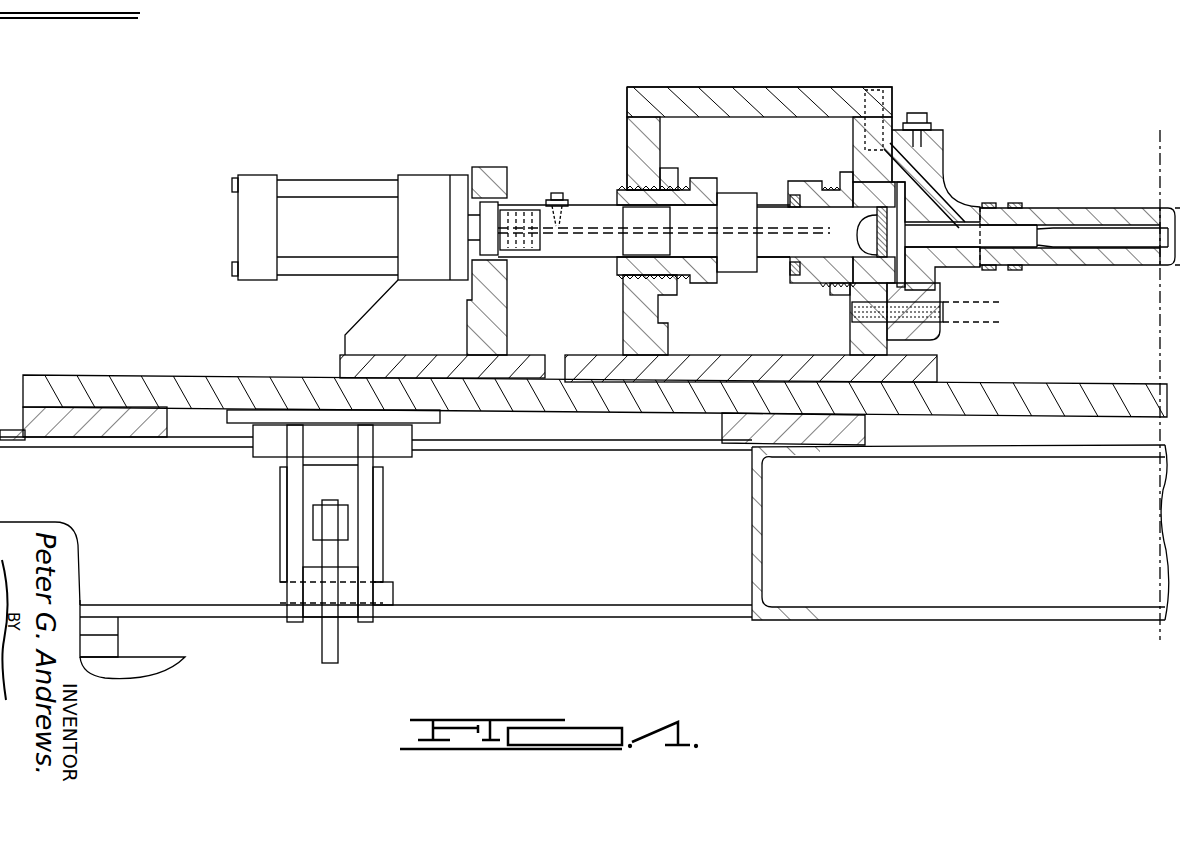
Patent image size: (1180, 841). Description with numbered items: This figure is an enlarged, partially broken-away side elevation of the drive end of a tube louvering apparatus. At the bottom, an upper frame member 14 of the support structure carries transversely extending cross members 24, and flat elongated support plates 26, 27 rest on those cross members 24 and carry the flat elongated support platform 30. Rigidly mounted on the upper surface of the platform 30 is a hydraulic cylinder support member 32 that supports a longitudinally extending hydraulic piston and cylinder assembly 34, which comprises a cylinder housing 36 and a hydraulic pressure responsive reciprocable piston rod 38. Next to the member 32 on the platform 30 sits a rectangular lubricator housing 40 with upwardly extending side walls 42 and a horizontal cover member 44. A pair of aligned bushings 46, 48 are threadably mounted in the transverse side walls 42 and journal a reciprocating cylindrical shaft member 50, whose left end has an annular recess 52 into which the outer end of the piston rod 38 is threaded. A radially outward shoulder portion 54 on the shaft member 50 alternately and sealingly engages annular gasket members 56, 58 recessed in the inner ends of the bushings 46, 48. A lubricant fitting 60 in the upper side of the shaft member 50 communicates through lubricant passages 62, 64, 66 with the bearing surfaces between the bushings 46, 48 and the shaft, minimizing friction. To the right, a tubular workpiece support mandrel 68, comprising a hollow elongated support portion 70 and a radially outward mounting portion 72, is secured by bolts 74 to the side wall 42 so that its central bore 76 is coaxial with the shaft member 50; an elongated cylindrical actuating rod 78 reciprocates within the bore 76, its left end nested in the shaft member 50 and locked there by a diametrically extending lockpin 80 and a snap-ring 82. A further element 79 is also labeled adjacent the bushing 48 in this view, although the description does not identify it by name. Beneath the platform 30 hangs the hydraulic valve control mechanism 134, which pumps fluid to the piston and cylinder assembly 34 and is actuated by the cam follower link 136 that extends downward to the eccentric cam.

The upper frame member 14 is at (250, 606).
The cross member 24 is at (0, 492).
The support plate 26 is at (170, 421).
The support plate 27 is at (868, 428).
The support platform 30 is at (101, 372).
The hydraulic cylinder support member 32 is at (500, 164).
The hydraulic piston and cylinder assembly 34 is at (301, 181).
The cylinder housing 36 is at (258, 272).
The piston rod 38 is at (496, 265).
The lubricator housing 40 is at (625, 133).
The side wall 42 is at (641, 152).
The cover member 44 is at (755, 86).
The bushing 46 is at (702, 278).
The bushing 48 is at (788, 190).
The shaft member 50 is at (772, 260).
The annular recess 52 is at (520, 208).
The shoulder portion 54 is at (733, 277).
The gasket member 56 is at (737, 192).
The gasket member 58 is at (792, 287).
The lubricant fitting 60 is at (557, 192).
The lubricant passage 62 is at (583, 250).
The lubricant passage 64 is at (592, 232).
The lubricant passage 66 is at (676, 240).
The workpiece support mandrel 68 is at (1087, 206).
The support portion 70 is at (1088, 264).
The mounting portion 72 is at (945, 142).
The bolt 74 is at (948, 314).
The central bore 76 is at (1128, 248).
The actuating rod 78 is at (1000, 215).
The threads 79 is at (838, 290).
The lockpin 80 is at (874, 214).
The snap-ring 82 is at (912, 277).
The hydraulic valve control mechanism 134 is at (386, 515).
The cam follower link 136 is at (341, 652).